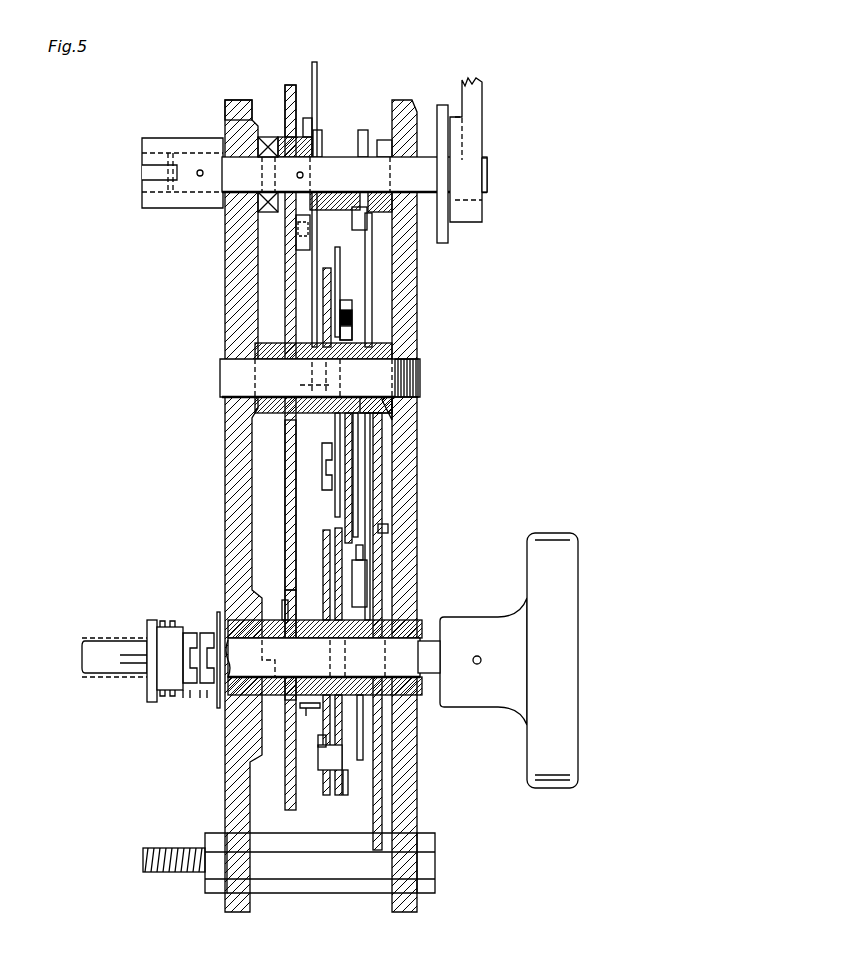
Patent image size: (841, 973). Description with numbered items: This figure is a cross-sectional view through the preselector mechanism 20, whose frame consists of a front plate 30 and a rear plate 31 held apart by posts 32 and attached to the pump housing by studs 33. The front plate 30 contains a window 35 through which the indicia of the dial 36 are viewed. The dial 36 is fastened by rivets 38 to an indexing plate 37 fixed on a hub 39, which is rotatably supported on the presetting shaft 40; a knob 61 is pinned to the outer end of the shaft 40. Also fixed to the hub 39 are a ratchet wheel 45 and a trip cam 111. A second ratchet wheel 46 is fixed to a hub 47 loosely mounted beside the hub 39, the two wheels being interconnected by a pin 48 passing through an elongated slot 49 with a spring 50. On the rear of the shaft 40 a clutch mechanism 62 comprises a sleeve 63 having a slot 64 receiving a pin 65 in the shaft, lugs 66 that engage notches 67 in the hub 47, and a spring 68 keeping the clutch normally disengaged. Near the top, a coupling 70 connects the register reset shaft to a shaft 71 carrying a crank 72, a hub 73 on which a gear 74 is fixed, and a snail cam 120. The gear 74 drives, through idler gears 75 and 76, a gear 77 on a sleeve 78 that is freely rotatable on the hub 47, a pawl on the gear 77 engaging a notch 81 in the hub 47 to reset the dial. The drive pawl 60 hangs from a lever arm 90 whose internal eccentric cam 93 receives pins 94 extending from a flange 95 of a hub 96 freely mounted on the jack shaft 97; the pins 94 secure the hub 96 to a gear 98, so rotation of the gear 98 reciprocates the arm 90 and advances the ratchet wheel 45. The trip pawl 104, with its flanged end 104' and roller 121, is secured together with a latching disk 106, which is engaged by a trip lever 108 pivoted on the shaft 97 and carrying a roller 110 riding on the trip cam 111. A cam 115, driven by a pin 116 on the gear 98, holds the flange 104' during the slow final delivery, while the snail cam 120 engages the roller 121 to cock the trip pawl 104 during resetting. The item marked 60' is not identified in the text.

The preselector mechanism 20 is at (226, 110).
The rear plate 31 is at (238, 100).
The front plate 30 is at (402, 100).
The window 35 is at (392, 405).
The gear 74 is at (288, 86).
The idler gear 75 is at (285, 312).
The idler gear 76 is at (285, 498).
The gear 77 is at (286, 548).
The sleeve 78 is at (283, 618).
The snail cam 120 is at (310, 118).
The hub 73 is at (308, 120).
The trip pawl 104 is at (321, 127).
The flange 104' is at (293, 378).
The latching disk 106 is at (363, 130).
The gear 98 is at (340, 215).
The roller 121 is at (296, 232).
The trip lever 108 is at (372, 255).
The flange 95 is at (333, 325).
The lever arm 90 is at (345, 318).
The internal eccentric cam 93 is at (352, 315).
The pins 94 is at (352, 332).
The hub 96 is at (385, 370).
The jack shaft 97 is at (225, 372).
The coupling 70 is at (152, 140).
The shaft 71 is at (440, 170).
The crank 72 is at (476, 100).
The pin 116 is at (322, 458).
The cam 115 is at (336, 480).
The drive pawl 60 is at (329, 478).
The indexing plate 37 is at (375, 482).
The dial 36 is at (382, 450).
The rivets 38 is at (388, 528).
The roller 110 is at (360, 578).
The hub 47 is at (326, 622).
The hub 39 is at (378, 622).
The notch 81 is at (280, 660).
The slot 64 is at (140, 652).
The pin 65 is at (148, 665).
The sleeve 63 is at (150, 626).
The lugs 66 is at (170, 628).
The notches 67 is at (205, 632).
The clutch mechanism 62 is at (218, 612).
The spring 68 is at (165, 698).
The presetting shaft 40 is at (430, 616).
The knob 61 is at (530, 542).
The link 60' is at (291, 719).
The trip cam 111 is at (363, 740).
The elongated slot 49 is at (326, 796).
The ratchet wheel 46 is at (338, 796).
The ratchet wheel 45 is at (346, 796).
The spring 50 is at (318, 756).
The pin 48 is at (318, 768).
The posts 32 is at (296, 893).
The studs 33 is at (172, 872).